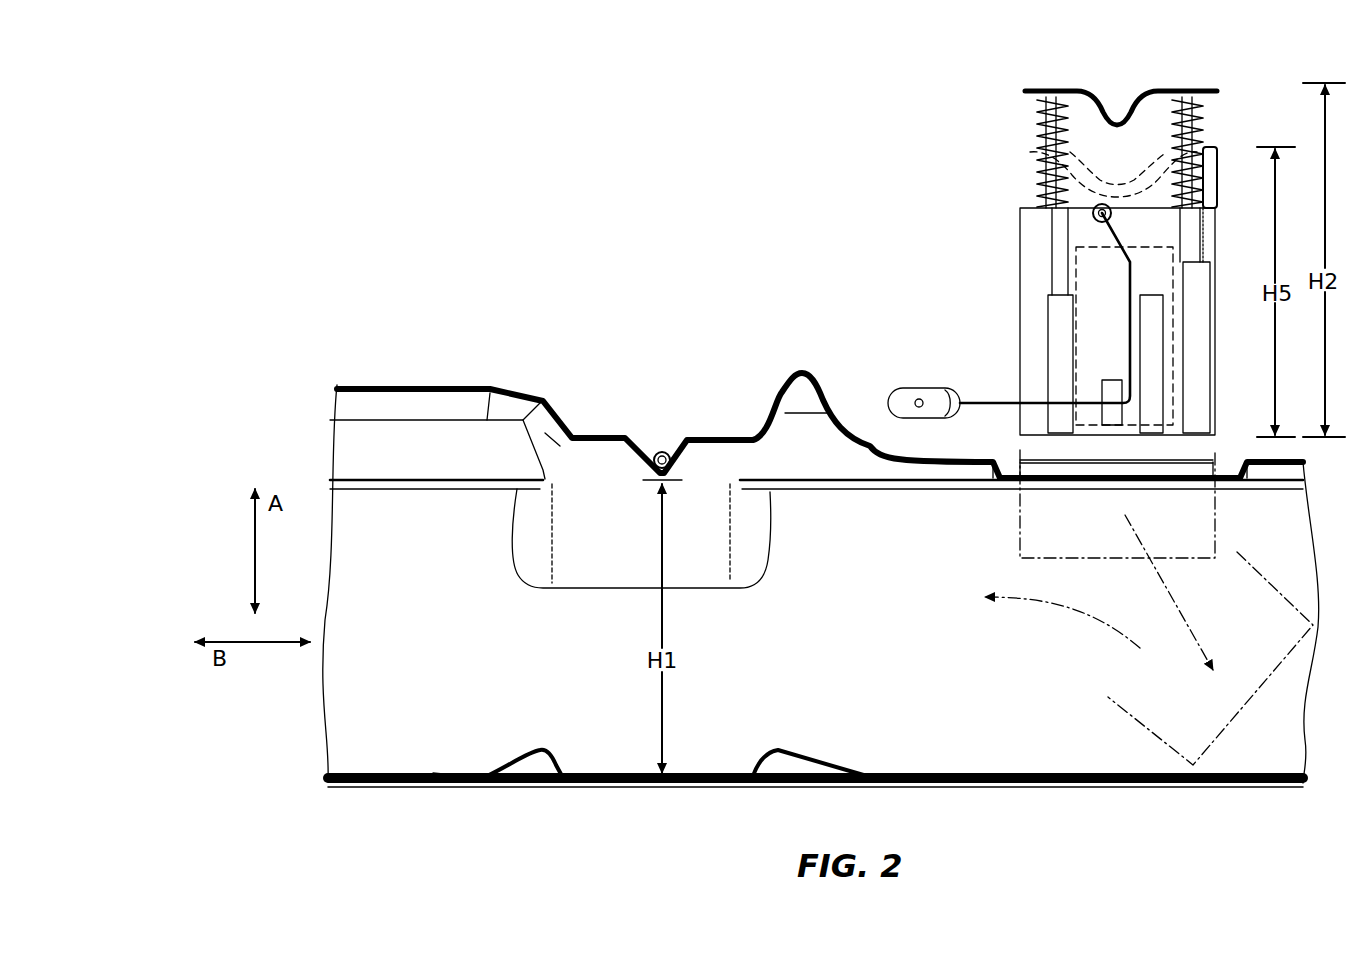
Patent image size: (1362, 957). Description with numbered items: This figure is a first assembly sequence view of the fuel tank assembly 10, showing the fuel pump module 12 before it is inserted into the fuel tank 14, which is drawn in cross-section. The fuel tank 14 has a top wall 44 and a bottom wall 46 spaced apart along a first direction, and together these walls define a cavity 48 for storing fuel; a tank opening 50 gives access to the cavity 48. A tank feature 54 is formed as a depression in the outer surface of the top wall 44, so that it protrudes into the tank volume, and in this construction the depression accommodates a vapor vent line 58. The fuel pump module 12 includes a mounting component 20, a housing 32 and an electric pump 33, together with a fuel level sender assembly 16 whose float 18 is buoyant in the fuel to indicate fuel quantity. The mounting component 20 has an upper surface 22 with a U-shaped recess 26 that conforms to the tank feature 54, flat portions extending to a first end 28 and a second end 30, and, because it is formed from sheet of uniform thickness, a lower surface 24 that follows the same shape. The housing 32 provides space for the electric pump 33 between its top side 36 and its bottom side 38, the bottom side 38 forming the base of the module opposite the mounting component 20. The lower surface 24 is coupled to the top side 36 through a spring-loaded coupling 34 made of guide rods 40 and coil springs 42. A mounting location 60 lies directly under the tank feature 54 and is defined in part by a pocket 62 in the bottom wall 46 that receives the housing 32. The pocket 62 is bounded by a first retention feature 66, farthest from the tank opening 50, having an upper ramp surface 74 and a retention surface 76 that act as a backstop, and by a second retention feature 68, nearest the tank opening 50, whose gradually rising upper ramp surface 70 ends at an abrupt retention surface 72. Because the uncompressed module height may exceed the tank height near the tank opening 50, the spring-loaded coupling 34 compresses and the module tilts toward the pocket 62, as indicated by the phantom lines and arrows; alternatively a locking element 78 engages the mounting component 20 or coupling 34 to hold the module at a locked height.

The fuel tank assembly 10 is at (492, 258).
The fuel pump module 12 is at (1020, 318).
The fuel tank 14 is at (1260, 786).
The fuel level sender assembly 16 is at (978, 402).
The float 18 is at (905, 395).
The mounting component 20 is at (1210, 88).
The upper surface 22 is at (1150, 89).
The lower surface 24 is at (1113, 174).
The recess 26 is at (1116, 124).
The first end 28 is at (1213, 94).
The second end 30 is at (1035, 87).
The housing 32 is at (1035, 268).
The electric pump 33 is at (1075, 345).
The spring-loaded coupling 34 is at (1002, 167).
The top side 36 is at (1030, 208).
The bottom side 38 is at (1035, 437).
The guide rods 40 is at (1040, 131).
The coil springs 42 is at (1037, 165).
The top wall 44 is at (345, 393).
The bottom wall 46 is at (362, 771).
The cavity 48 is at (392, 615).
The tank opening 50 is at (1030, 470).
The tank feature 54 is at (627, 469).
The vapor vent line 58 is at (662, 451).
The mounting location 60 is at (733, 680).
The pocket 62 is at (688, 773).
The first retention feature 66 is at (545, 748).
The second retention feature 68 is at (780, 750).
The upper ramp surface 70 is at (835, 758).
The retention surface 72 is at (757, 770).
The upper ramp surface 74 is at (505, 765).
The retention surface 76 is at (565, 767).
The locking element 78 is at (1217, 165).